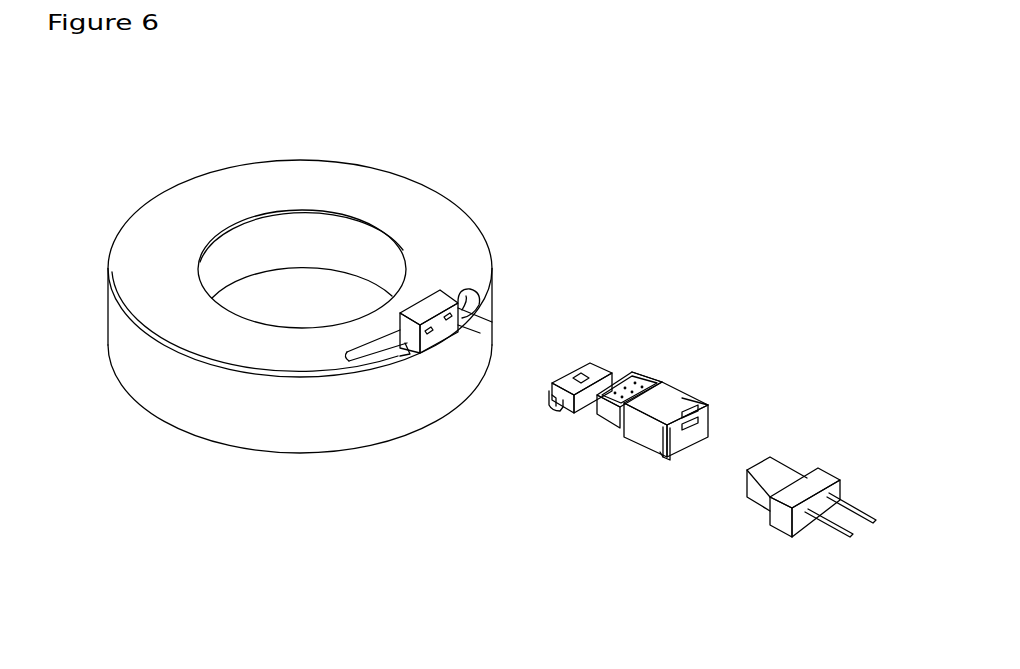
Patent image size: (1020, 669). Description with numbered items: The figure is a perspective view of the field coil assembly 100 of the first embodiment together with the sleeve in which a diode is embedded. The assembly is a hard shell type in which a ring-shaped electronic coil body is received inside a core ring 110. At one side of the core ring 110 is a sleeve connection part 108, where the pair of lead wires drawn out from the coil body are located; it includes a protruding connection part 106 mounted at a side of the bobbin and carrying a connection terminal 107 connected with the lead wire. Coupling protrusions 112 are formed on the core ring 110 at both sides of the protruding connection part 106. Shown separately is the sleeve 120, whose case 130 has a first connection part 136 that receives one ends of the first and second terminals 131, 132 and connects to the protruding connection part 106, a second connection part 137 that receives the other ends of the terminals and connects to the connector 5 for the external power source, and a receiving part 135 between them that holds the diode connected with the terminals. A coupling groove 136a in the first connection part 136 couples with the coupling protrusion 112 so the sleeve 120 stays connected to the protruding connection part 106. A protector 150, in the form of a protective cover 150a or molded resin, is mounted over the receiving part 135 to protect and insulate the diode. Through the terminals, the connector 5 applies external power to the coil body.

The connector 5 is at (850, 458).
The field coil assembly 100 is at (359, 289).
The protruding connection part 106 is at (458, 278).
The connection terminal 107 is at (455, 335).
The sleeve connection part 108 is at (477, 259).
The core ring 110 is at (168, 390).
The coupling protrusion 112 is at (410, 355).
The sleeve 120 is at (701, 366).
The case 130 is at (743, 407).
The first terminal 131 is at (698, 419).
The second terminal 132 is at (668, 456).
The receiving part 135 is at (645, 368).
The first connection part 136 is at (619, 349).
The coupling groove 136a is at (556, 406).
The second connection part 137 is at (690, 402).
The protector 150 is at (683, 348).
The protective cover 150a is at (690, 366).